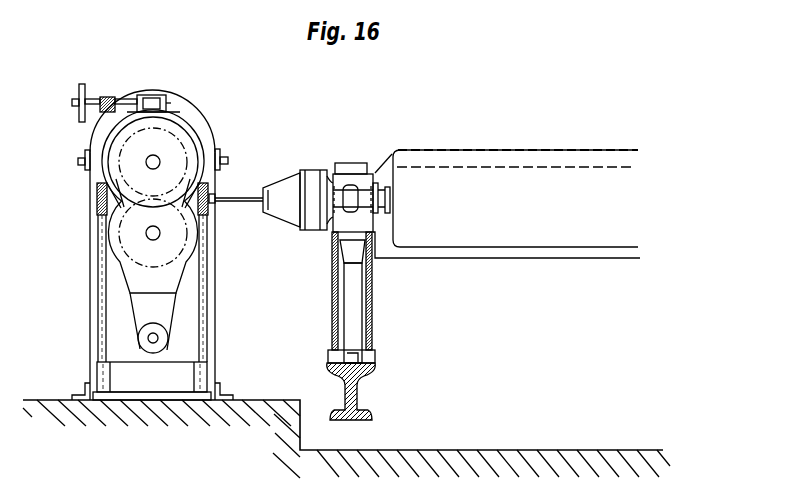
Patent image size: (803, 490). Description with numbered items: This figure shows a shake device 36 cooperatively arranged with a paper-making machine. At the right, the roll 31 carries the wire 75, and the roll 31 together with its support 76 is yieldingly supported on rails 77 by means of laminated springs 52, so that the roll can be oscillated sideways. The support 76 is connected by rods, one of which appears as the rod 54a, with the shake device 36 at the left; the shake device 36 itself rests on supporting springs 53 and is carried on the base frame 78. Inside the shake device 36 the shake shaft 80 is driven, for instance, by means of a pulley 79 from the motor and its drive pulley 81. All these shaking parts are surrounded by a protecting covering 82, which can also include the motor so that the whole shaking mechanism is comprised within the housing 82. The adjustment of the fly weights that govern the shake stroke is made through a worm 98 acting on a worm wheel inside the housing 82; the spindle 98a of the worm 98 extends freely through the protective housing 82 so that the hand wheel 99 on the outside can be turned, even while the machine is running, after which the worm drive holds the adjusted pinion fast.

The roll 31 is at (507, 235).
The shake device 36 is at (192, 128).
The laminated springs 52 is at (369, 315).
The supporting springs 53 is at (100, 308).
The drive shaft 54a is at (243, 201).
The wire 75 is at (508, 150).
The support of the roll 76 is at (352, 193).
The rails 77 is at (357, 395).
The base frame 78 is at (123, 378).
The pulley 79 is at (165, 340).
The shake shaft 80 is at (150, 160).
The drive pulley 81 is at (110, 145).
The protecting covering 82 is at (215, 251).
The worm 98 is at (168, 93).
The spindle of worm 98a is at (89, 101).
The hand wheel 99 is at (80, 120).